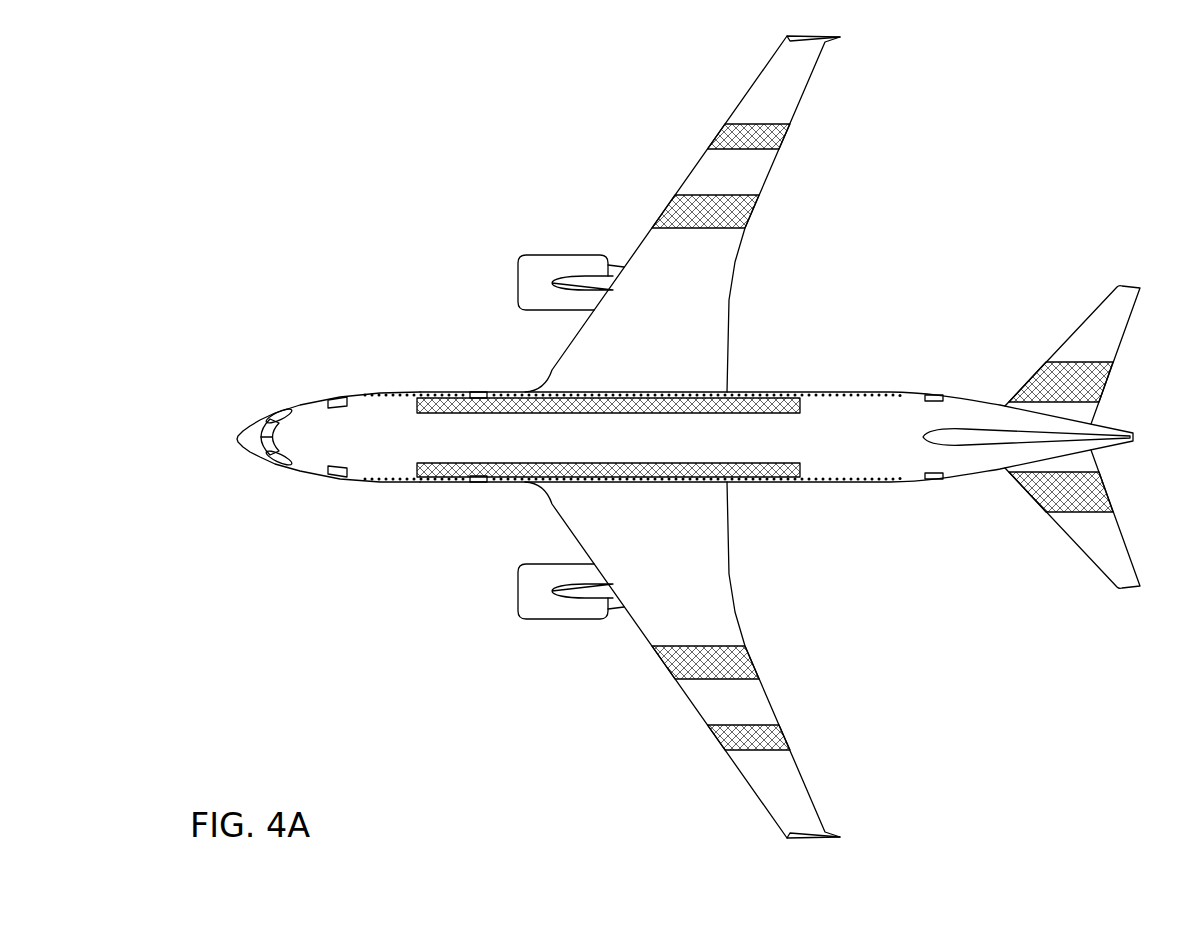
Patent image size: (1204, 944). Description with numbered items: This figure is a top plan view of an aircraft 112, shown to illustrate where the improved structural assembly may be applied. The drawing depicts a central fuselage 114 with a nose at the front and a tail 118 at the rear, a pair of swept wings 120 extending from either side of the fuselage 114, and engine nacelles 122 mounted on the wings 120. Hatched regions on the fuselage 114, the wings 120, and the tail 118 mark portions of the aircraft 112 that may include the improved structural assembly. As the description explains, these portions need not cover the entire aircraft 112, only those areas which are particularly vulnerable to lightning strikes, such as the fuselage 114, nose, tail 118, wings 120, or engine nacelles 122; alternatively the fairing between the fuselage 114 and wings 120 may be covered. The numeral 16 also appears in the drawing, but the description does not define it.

The aircraft 16 is at (652, 437).
The aircraft 112 is at (685, 492).
The fuselage 114 is at (611, 485).
The tail 118 is at (1031, 437).
The wings 120 is at (710, 437).
The engine nacelles 122 is at (514, 439).